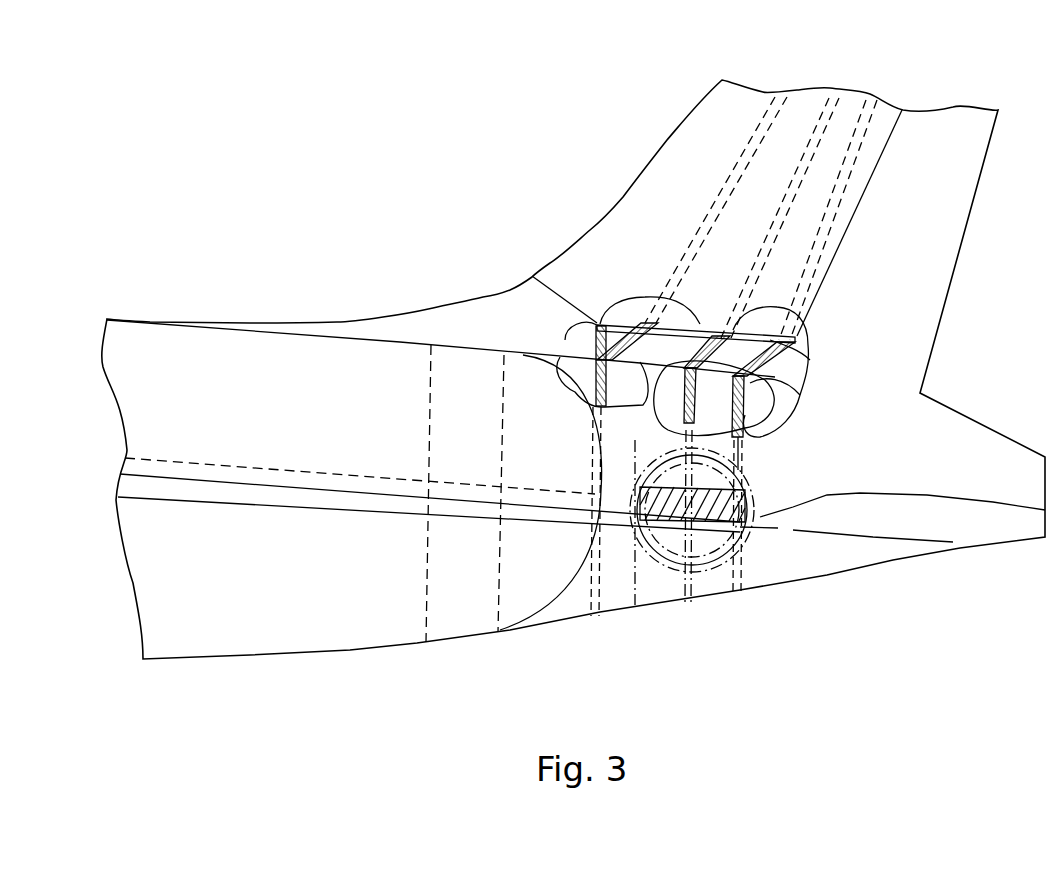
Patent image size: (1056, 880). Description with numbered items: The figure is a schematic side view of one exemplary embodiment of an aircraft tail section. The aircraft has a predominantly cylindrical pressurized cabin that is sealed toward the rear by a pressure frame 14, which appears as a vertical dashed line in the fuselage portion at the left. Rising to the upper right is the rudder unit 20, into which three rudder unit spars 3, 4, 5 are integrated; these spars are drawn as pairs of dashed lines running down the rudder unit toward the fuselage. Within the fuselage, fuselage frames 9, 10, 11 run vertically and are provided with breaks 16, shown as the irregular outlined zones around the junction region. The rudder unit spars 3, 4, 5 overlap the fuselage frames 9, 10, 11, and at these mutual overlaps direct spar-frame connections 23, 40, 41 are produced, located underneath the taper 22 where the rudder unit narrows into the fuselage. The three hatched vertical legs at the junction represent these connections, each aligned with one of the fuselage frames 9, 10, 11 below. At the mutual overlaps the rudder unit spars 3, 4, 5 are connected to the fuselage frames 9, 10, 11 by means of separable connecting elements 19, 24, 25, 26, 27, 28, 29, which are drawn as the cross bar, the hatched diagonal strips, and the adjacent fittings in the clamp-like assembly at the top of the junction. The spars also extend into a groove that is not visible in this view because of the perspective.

The rudder unit spar 3 is at (773, 105).
The rudder unit spar 4 is at (827, 110).
The rudder unit spar 5 is at (875, 110).
The fuselage frame 9 is at (590, 610).
The fuselage frame 10 is at (682, 593).
The fuselage frame 11 is at (733, 583).
The pressure frame 14 is at (426, 614).
The break 16 is at (587, 353).
The separable connecting element 19 is at (793, 352).
The rudder unit 20 is at (955, 210).
The taper 22 is at (812, 300).
The spar-frame connection 23 is at (748, 435).
The separable connecting element 24 is at (783, 382).
The separable connecting element 25 is at (788, 393).
The separable connecting element 26 is at (695, 310).
The separable connecting element 27 is at (690, 300).
The separable connecting element 28 is at (600, 323).
The separable connecting element 29 is at (552, 285).
The spar-frame connection 40 is at (700, 378).
The spar-frame connection 41 is at (605, 406).